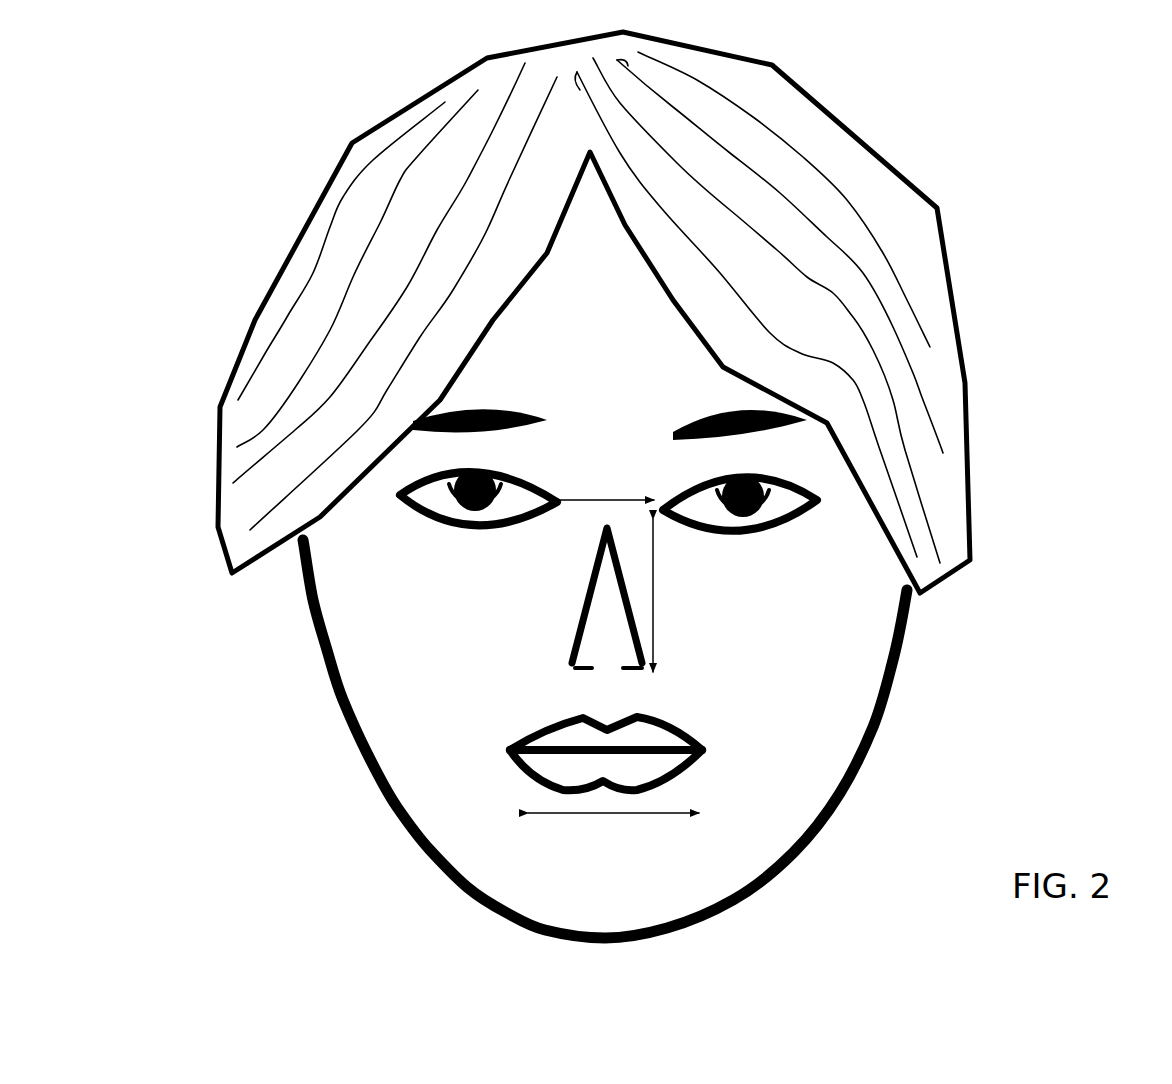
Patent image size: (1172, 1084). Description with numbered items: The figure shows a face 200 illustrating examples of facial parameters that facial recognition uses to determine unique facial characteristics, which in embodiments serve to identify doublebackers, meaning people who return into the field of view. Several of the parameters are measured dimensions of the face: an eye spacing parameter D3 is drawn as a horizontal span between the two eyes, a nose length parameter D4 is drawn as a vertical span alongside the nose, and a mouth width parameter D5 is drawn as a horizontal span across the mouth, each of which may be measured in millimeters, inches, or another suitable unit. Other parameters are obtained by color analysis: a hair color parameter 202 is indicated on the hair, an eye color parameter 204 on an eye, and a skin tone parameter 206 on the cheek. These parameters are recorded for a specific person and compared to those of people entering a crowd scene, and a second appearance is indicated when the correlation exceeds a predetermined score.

The face 200 is at (979, 134).
The hair color parameter 202 is at (285, 300).
The eye color parameter 204 is at (473, 510).
The skin tone parameter 206 is at (363, 677).
The eye spacing parameter D3 is at (597, 497).
The nose length parameter D4 is at (655, 572).
The mouth width parameter D5 is at (615, 816).